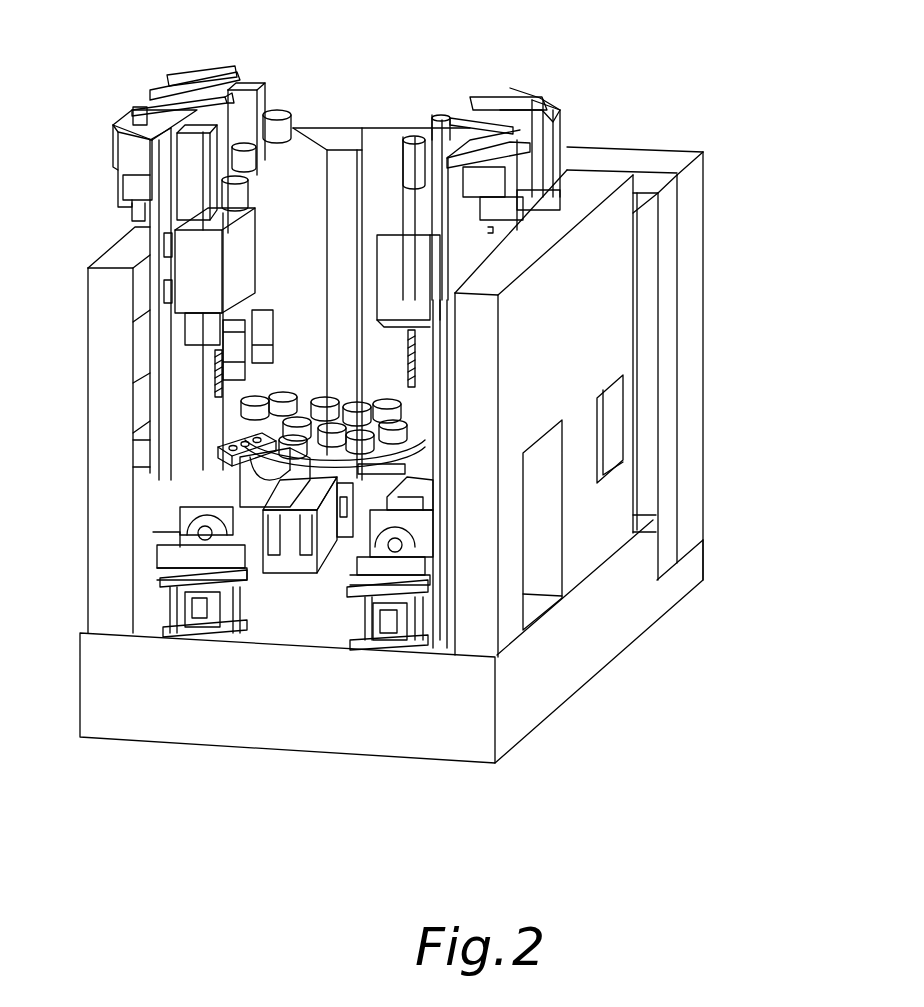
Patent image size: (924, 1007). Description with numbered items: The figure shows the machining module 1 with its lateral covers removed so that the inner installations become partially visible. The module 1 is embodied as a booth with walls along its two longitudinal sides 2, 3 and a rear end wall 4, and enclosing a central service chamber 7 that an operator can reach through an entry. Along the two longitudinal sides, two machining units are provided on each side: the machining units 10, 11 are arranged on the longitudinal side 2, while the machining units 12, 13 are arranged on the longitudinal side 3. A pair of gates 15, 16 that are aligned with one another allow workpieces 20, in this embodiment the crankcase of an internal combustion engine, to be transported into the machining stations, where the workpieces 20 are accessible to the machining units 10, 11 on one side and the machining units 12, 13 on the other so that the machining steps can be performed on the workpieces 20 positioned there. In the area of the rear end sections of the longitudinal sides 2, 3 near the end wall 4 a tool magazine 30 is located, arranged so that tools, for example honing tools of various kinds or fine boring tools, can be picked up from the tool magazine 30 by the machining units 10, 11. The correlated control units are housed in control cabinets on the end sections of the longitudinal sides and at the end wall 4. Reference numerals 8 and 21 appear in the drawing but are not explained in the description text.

The module 1 is at (700, 126).
The longitudinal side 2 is at (107, 367).
The longitudinal side 3 is at (593, 328).
The rear end wall 4 is at (375, 178).
The service chamber 7 is at (333, 566).
The machine base 8 is at (193, 707).
The machining unit 10 is at (123, 150).
The machining unit 11 is at (212, 72).
The machining unit 12 is at (477, 143).
The machining unit 13 is at (557, 150).
The gate 15 is at (187, 477).
The gate 16 is at (548, 542).
The workpiece 20 is at (248, 495).
The holding plate 21 is at (233, 445).
The tool magazine 30 is at (300, 413).